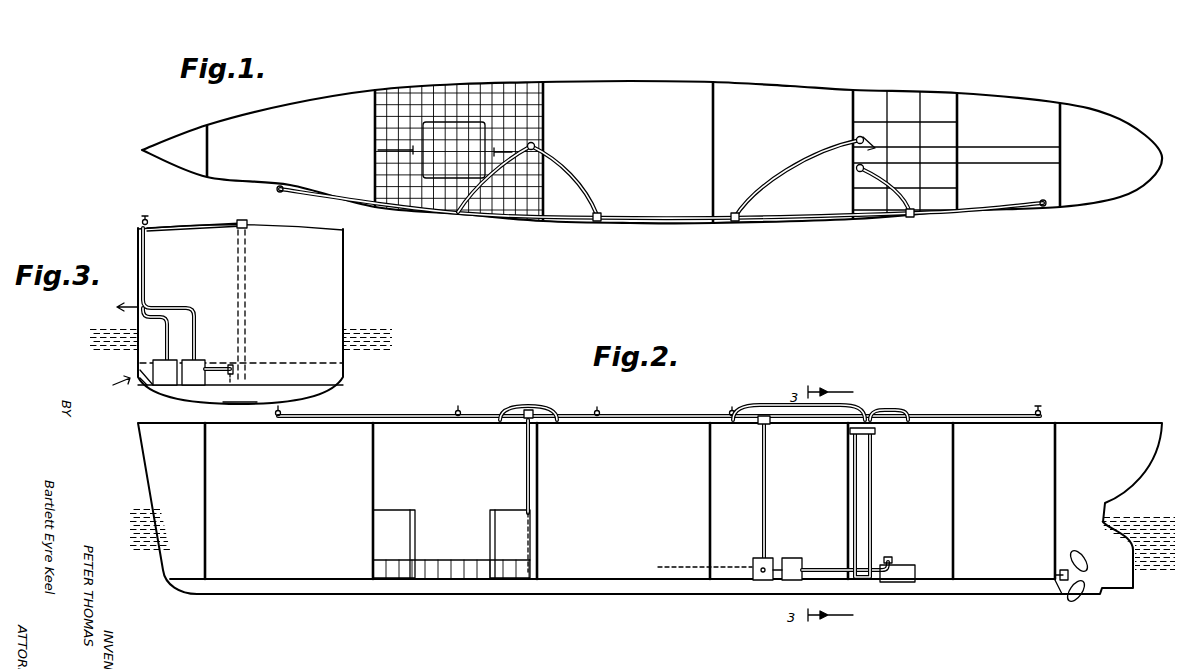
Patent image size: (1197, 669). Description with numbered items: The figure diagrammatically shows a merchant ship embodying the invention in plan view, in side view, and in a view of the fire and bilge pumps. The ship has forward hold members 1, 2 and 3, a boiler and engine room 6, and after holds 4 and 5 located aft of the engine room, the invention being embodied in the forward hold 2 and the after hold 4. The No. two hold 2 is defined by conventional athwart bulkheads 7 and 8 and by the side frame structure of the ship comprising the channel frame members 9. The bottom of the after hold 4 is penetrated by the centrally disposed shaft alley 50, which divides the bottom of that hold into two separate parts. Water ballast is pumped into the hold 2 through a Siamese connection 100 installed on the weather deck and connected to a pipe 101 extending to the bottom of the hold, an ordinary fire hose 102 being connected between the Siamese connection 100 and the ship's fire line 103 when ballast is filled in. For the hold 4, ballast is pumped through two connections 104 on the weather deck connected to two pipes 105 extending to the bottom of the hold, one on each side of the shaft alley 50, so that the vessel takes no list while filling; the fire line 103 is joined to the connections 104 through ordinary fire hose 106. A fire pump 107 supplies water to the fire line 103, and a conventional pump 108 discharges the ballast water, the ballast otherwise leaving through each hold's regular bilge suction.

In FIG. 1, the forward hold member 1 is at (306, 156).
In FIG. 2, the forward hold member 1 is at (273, 495).
In FIG. 1, the forward hold 2 is at (462, 98).
In FIG. 2, the forward hold 2 is at (447, 495).
In FIG. 1, the forward hold member 3 is at (631, 155).
In FIG. 2, the forward hold member 3 is at (611, 494).
In FIG. 1, the after hold 4 is at (940, 131).
In FIG. 2, the after hold 4 is at (910, 489).
In FIG. 1, the after hold 5 is at (1008, 139).
In FIG. 2, the after hold 5 is at (992, 481).
In FIG. 1, the boiler and engine room 6 is at (779, 155).
In FIG. 2, the boiler and engine room 6 is at (799, 495).
In FIG. 1, the athwart bulkhead 7 is at (375, 100).
In FIG. 1, the athwart bulkhead 8 is at (545, 88).
In FIG. 1, the channel frame member 9 is at (440, 89).
In FIG. 1, the shaft alley 50 is at (856, 136).
In FIG. 1, the Siamese connection 100 is at (535, 148).
In FIG. 2, the pipe 101 is at (525, 447).
In FIG. 1, the fire hose 102 is at (590, 217).
In FIG. 2, the fire hose 102 is at (535, 412).
In FIG. 1, the fire line 103 is at (630, 222).
In FIG. 2, the fire line 103 is at (404, 420).
In FIG. 3, the fire line 103 is at (143, 223).
In FIG. 1, the connection 104 is at (852, 159).
In FIG. 2, the connection 104 is at (873, 434).
In FIG. 2, the pipe 105 is at (860, 512).
In FIG. 1, the fire hose 106 is at (767, 178).
In FIG. 2, the fire hose 106 is at (870, 410).
In FIG. 2, the fire pump 107 is at (757, 575).
In FIG. 3, the fire pump 107 is at (158, 382).
In FIG. 2, the pump 108 is at (787, 578).
In FIG. 3, the pump 108 is at (188, 385).